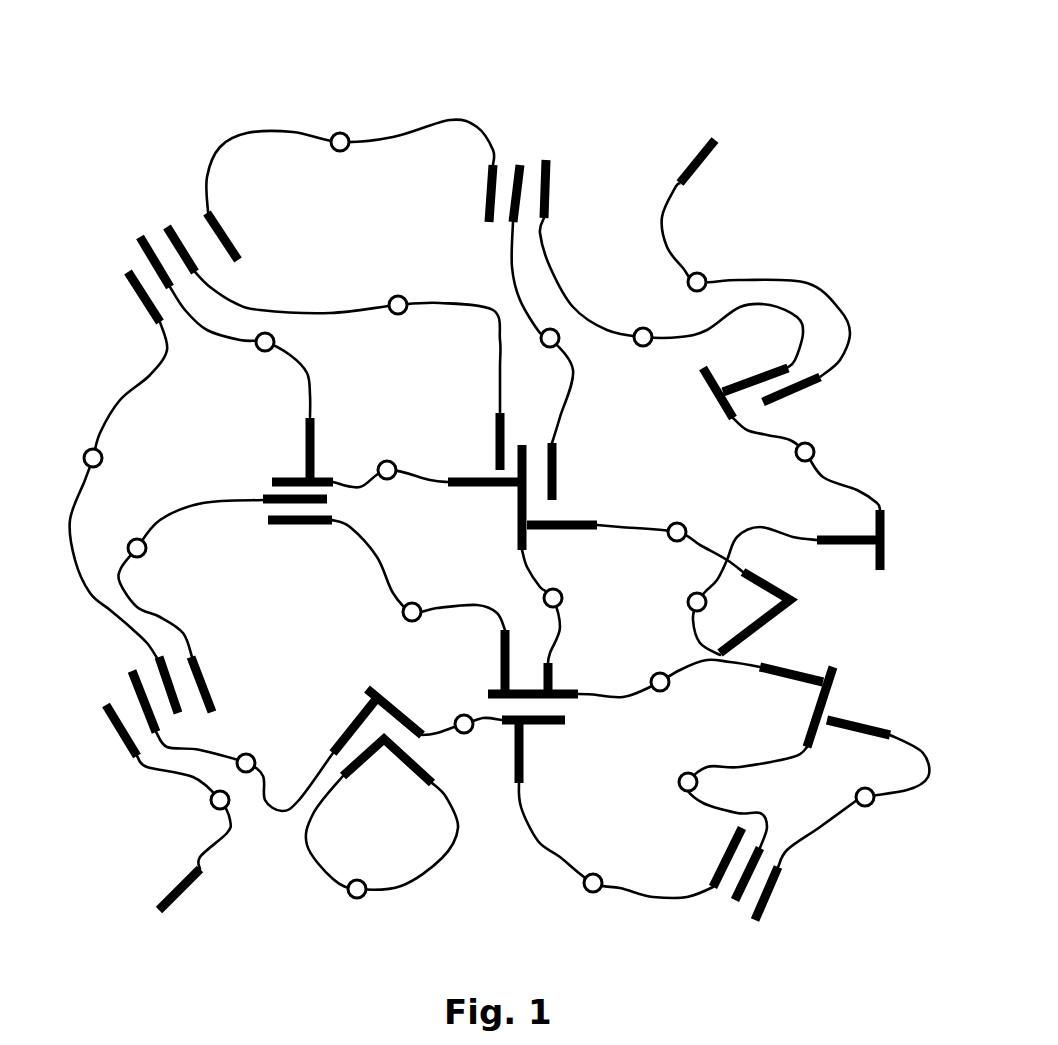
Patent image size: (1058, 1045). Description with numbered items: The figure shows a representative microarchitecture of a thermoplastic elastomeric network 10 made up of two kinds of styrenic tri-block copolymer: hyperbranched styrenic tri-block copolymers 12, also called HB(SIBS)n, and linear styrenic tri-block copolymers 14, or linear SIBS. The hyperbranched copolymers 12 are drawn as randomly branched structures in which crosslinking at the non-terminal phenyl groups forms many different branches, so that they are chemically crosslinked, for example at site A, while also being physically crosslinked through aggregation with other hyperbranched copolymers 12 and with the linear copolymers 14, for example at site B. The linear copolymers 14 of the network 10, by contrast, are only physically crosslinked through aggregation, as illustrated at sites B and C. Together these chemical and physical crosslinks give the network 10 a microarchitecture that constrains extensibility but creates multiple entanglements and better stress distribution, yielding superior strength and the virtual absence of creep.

The thermoplastic elastomeric network 10 is at (803, 100).
The hyperbranched styrenic tri-block copolymers 12 is at (828, 710).
The linear styrenic tri-block copolymers 14 is at (817, 287).